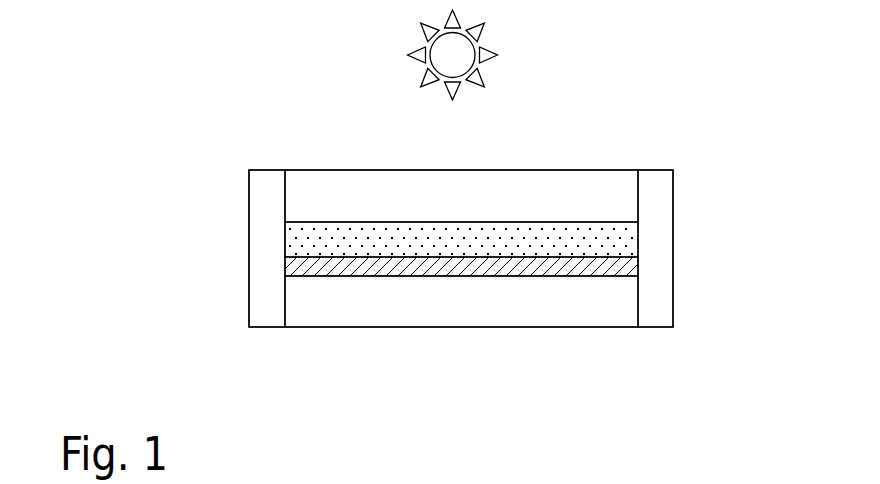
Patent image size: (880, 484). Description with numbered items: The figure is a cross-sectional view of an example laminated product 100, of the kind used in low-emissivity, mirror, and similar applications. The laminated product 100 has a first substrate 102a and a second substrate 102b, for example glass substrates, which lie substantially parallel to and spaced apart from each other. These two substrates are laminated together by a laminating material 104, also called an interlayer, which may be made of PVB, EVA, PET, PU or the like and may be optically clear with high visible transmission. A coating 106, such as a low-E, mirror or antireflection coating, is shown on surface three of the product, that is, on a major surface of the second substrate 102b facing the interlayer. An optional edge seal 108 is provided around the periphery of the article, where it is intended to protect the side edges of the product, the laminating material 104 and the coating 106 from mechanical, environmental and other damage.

The laminated product 100 is at (583, 133).
The first substrate 102a is at (622, 197).
The second substrate 102b is at (622, 302).
The laminating material 104 is at (622, 240).
The coating 106 is at (622, 263).
The edge seal 108 is at (268, 329).